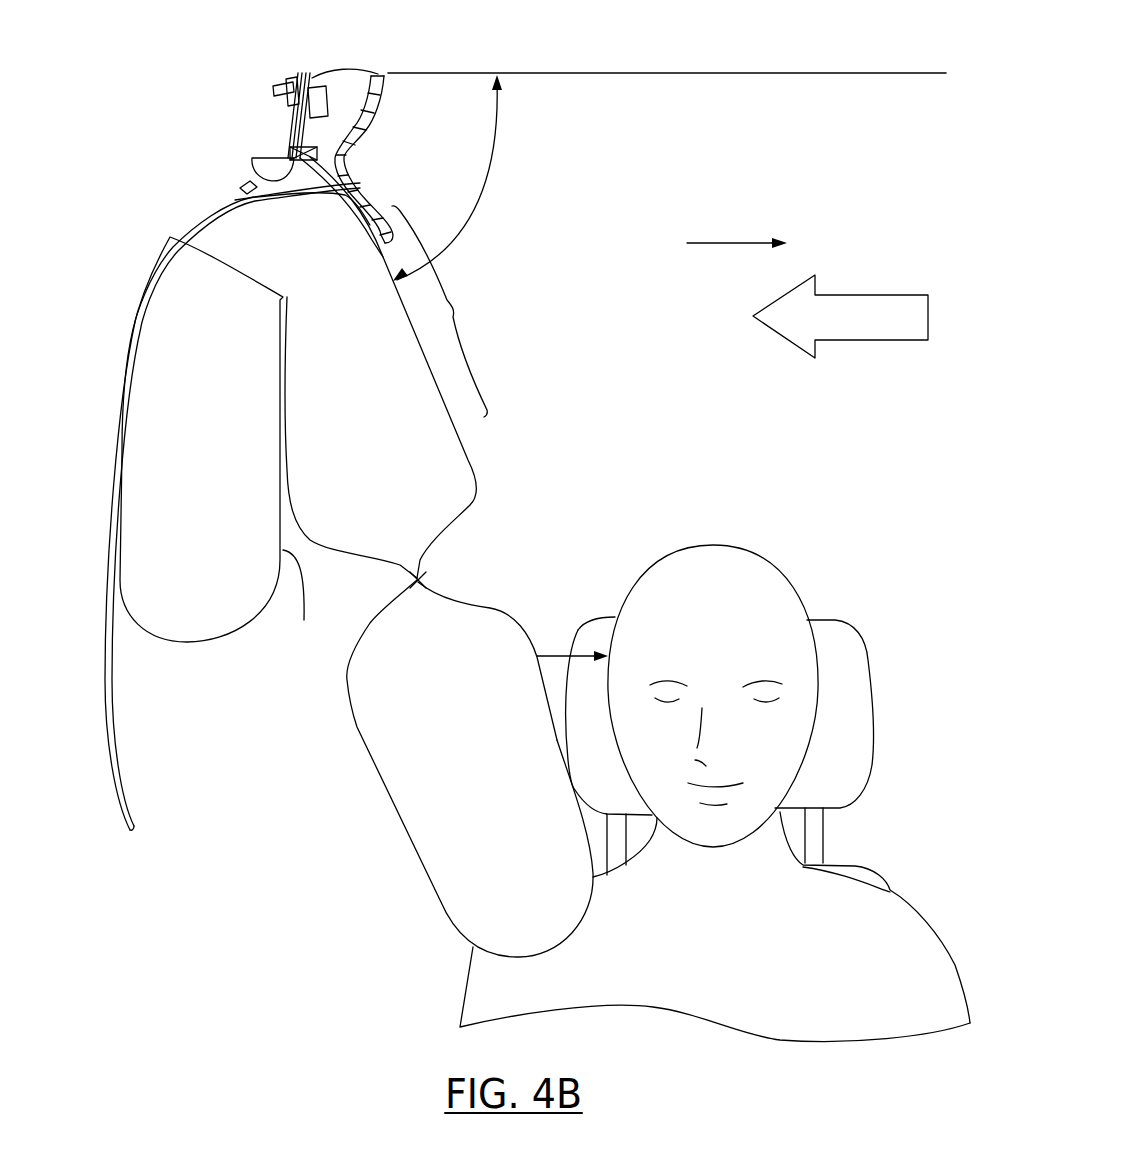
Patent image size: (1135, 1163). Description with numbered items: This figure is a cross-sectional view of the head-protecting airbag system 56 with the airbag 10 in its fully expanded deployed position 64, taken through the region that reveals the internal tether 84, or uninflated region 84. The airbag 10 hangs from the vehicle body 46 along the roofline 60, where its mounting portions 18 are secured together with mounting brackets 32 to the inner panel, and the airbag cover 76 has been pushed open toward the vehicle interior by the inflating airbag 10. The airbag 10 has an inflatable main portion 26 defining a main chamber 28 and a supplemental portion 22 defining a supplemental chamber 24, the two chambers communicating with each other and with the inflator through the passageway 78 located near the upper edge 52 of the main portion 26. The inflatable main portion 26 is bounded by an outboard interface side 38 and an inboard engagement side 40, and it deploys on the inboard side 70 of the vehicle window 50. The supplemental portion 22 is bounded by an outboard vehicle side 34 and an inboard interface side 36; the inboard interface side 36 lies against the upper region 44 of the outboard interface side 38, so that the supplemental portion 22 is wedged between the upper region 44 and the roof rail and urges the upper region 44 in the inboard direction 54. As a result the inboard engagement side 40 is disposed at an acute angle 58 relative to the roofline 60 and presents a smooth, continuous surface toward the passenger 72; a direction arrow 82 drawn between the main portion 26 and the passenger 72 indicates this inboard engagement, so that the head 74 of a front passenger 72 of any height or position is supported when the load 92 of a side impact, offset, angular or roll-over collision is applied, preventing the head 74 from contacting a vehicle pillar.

The airbag 10 is at (530, 365).
The mounting portions 18 is at (292, 141).
The supplemental portion 22 is at (203, 643).
The supplemental chamber 24 is at (123, 521).
The inflatable main portion 26 is at (483, 606).
The main chamber 28 is at (370, 747).
The mounting brackets 32 is at (290, 130).
The outboard vehicle side 34 is at (118, 548).
The inboard interface side 36 is at (300, 603).
The outboard interface side 38 is at (350, 553).
The inboard engagement side 40 is at (421, 577).
The upper region 44 is at (447, 300).
The vehicle body 46 is at (127, 337).
The vehicle window 50 is at (127, 750).
The upper edge 52 is at (292, 157).
The inboard direction 54 is at (727, 243).
The head-protecting airbag system 56 is at (600, 252).
The acute angle 58 is at (490, 173).
The roofline 60 is at (688, 73).
The deployed position 64 is at (656, 127).
The inboard side 70 is at (603, 168).
The passenger 72 is at (923, 930).
The head 74 is at (640, 573).
The airbag cover 76 is at (373, 180).
The passageway 78 is at (190, 238).
The lateral direction 82 is at (578, 657).
The internal tether 84 is at (415, 583).
The load 92 is at (862, 294).